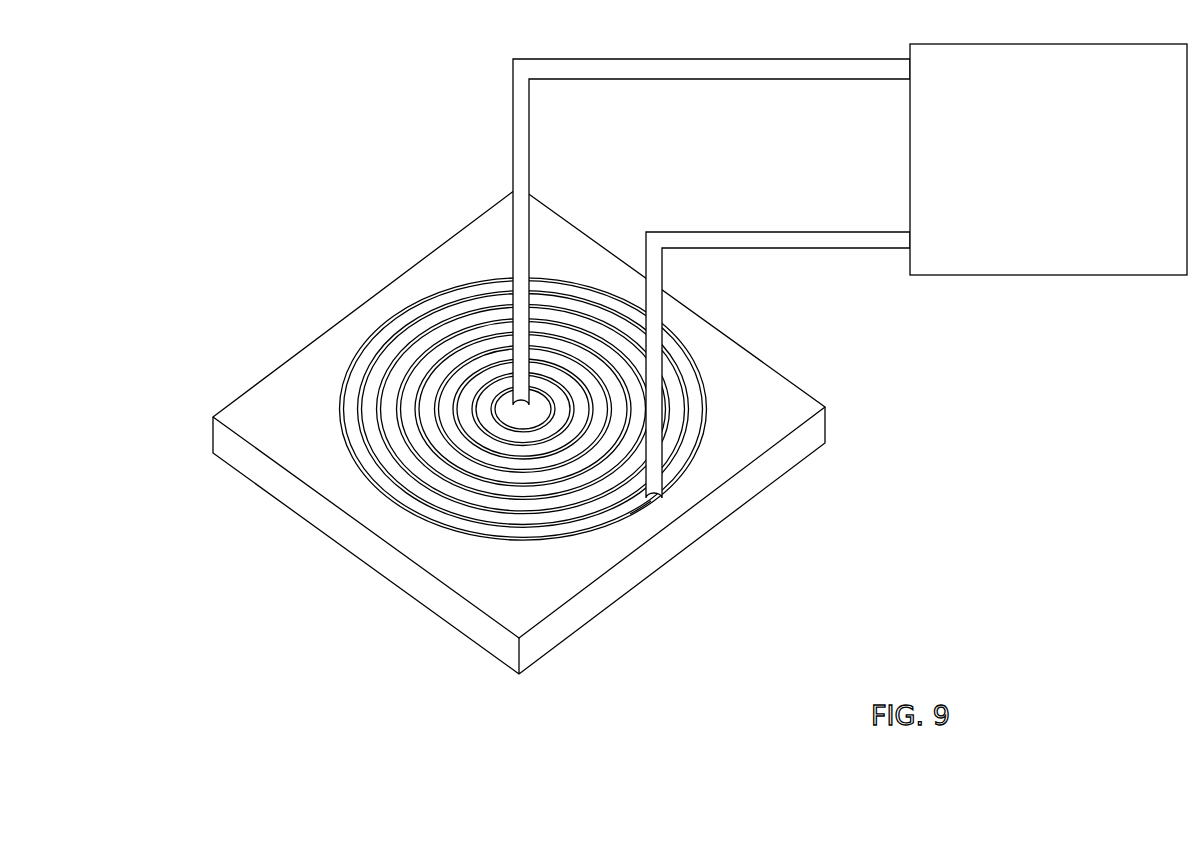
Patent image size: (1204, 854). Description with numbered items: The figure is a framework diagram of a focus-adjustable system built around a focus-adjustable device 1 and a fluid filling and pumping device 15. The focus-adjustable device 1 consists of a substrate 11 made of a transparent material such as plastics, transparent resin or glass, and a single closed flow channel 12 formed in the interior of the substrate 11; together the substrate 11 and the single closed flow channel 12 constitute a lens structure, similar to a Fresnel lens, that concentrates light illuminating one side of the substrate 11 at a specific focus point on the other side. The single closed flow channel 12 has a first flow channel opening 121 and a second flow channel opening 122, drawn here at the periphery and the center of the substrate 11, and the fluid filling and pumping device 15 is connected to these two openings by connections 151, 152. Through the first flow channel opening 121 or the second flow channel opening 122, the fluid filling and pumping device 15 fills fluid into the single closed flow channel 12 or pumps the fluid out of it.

The focus-adjustable device 1 is at (509, 430).
The substrate 11 is at (800, 450).
The single closed flow channel 12 is at (489, 426).
The first flow channel opening 121 is at (657, 501).
The second flow channel opening 122 is at (517, 417).
The fluid filling and pumping device 15 is at (1071, 155).
The first lead 151 is at (842, 242).
The second lead 152 is at (795, 61).